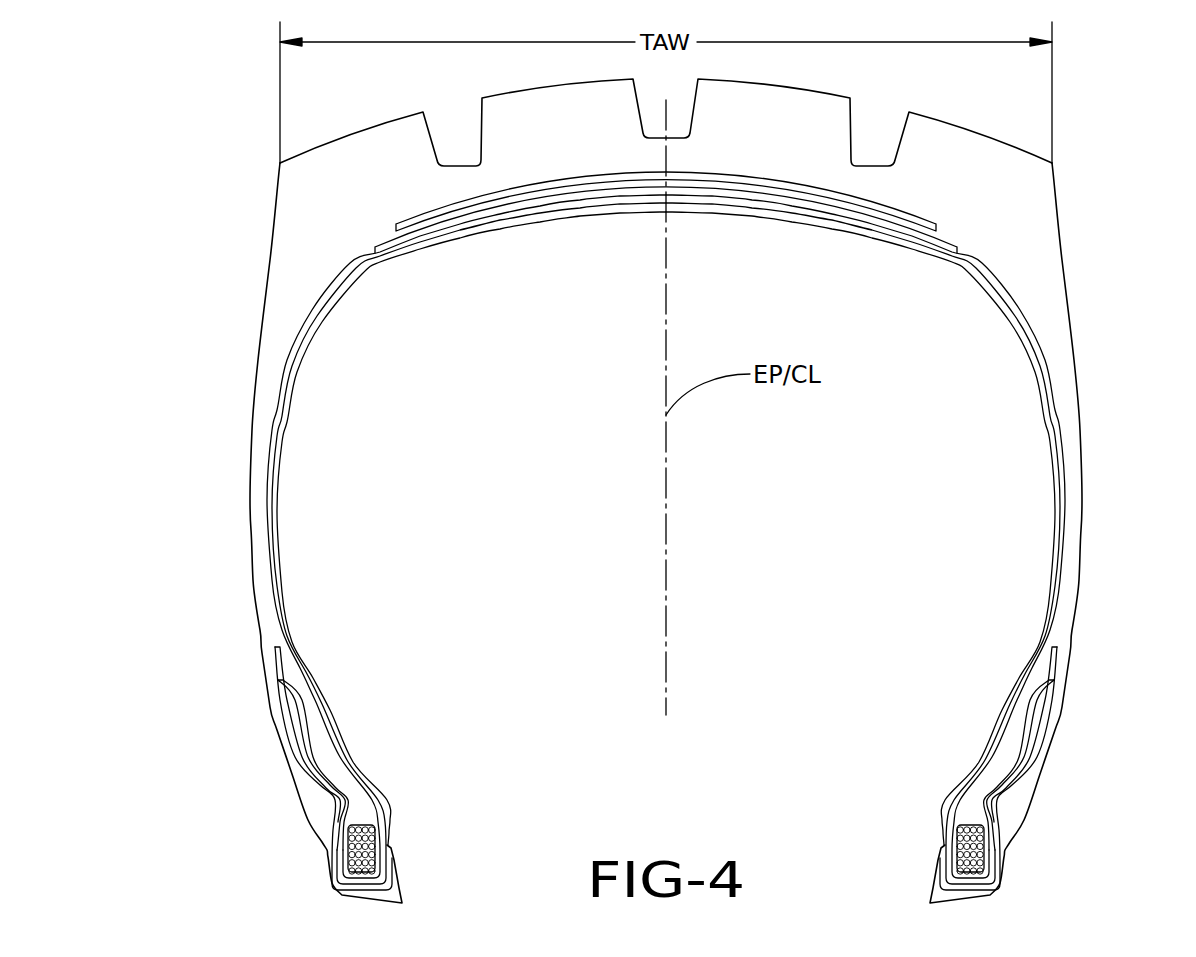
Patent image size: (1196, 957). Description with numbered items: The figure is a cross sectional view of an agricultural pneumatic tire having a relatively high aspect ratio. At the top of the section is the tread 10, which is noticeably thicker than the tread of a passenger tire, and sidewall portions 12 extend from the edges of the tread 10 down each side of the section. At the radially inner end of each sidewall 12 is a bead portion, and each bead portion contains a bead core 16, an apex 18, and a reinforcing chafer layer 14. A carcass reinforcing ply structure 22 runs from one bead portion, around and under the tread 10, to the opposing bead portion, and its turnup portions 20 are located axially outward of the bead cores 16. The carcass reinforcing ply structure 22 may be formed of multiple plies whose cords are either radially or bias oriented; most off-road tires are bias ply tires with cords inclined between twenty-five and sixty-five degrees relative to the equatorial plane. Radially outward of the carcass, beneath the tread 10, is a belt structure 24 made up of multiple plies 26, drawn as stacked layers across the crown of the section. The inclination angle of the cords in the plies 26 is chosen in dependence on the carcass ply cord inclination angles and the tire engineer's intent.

The tread 10 is at (328, 167).
The sidewall portion 12 is at (1077, 540).
The reinforcing chafer layer 14 is at (300, 744).
The bead core 16 is at (362, 828).
The apex 18 is at (337, 768).
The turnup portion 20 is at (275, 650).
The carcass reinforcing ply structure 22 is at (270, 440).
The belt structure 24 is at (475, 190).
The plies 26 is at (950, 245).